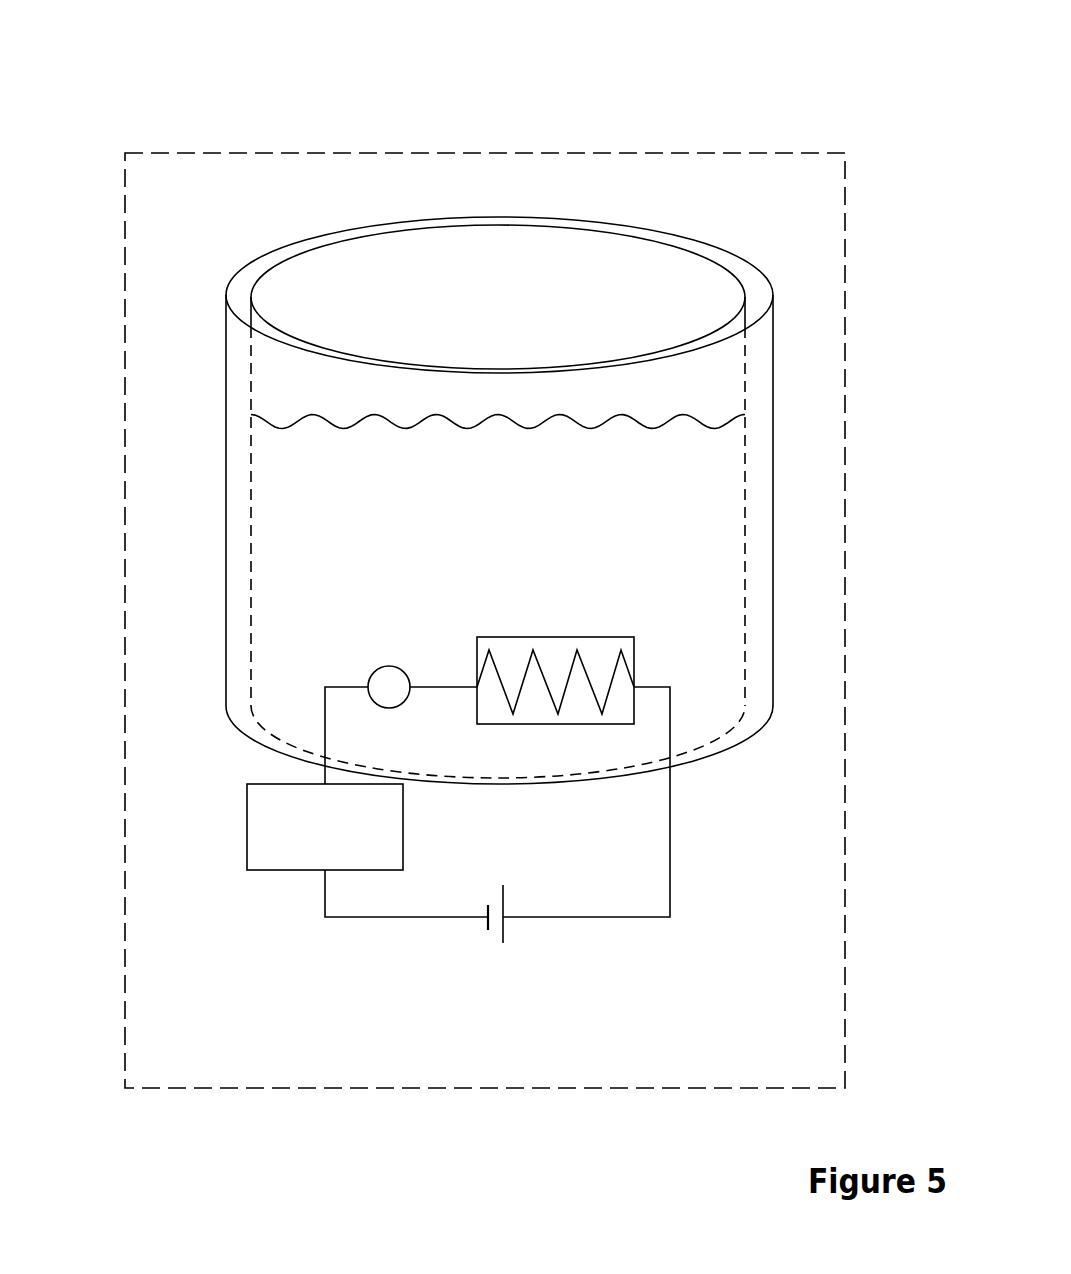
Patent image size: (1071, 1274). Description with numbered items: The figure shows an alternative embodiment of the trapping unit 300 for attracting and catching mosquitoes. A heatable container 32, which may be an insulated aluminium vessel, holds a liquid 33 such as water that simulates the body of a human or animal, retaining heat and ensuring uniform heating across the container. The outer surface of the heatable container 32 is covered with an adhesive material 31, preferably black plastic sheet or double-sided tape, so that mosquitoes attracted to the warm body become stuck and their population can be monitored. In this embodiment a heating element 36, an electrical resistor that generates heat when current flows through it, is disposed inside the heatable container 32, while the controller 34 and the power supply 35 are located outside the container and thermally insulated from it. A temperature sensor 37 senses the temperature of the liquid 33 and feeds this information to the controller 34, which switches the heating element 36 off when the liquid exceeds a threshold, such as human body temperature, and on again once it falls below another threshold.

The trapping unit 300 is at (177, 88).
The adhesive material 31 is at (226, 505).
The heatable container 32 is at (251, 558).
The liquid 33 is at (295, 608).
The controller 34 is at (247, 835).
The power supply 35 is at (487, 935).
The heating element 36 is at (572, 637).
The temperature sensor 37 is at (392, 666).